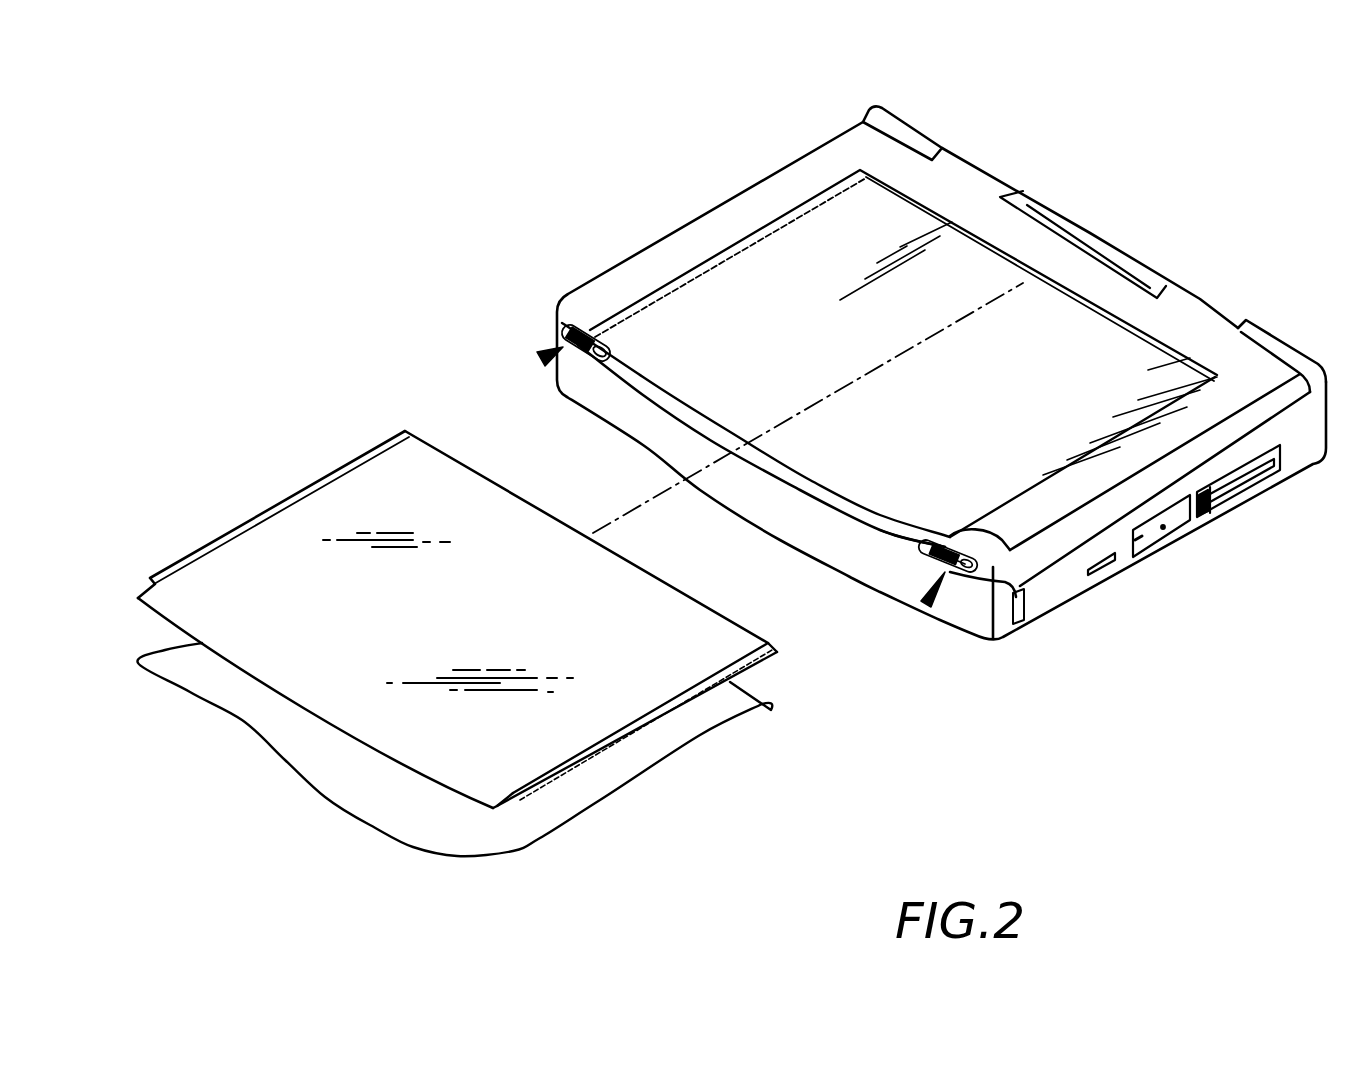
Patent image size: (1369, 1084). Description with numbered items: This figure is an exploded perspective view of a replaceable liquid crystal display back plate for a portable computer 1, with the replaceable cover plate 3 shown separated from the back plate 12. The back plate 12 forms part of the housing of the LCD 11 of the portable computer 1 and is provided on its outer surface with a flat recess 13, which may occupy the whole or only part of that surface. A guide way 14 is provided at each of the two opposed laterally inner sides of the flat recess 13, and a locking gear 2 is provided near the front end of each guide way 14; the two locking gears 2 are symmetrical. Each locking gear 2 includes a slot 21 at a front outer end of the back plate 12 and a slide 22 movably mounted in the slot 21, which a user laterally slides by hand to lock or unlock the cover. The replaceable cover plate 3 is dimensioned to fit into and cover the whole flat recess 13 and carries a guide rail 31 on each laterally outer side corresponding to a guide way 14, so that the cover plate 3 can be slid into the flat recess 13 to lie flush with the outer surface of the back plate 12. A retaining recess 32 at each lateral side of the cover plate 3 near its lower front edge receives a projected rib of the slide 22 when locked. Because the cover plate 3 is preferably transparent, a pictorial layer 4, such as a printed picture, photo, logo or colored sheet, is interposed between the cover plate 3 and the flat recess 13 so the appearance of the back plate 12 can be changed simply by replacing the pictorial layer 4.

The portable computer 1 is at (800, 522).
The LCD 11 is at (1093, 512).
The back plate 12 is at (960, 180).
The flat recess 13 is at (793, 237).
The guide way 14 is at (580, 328).
The locking gear 2 is at (541, 359).
The slot 21 is at (915, 548).
The slide 22 is at (953, 575).
The replaceable cover plate 3 is at (413, 730).
The guide rail 31 is at (620, 733).
The retaining recess 32 is at (510, 800).
The pictorial layer 4 is at (265, 718).